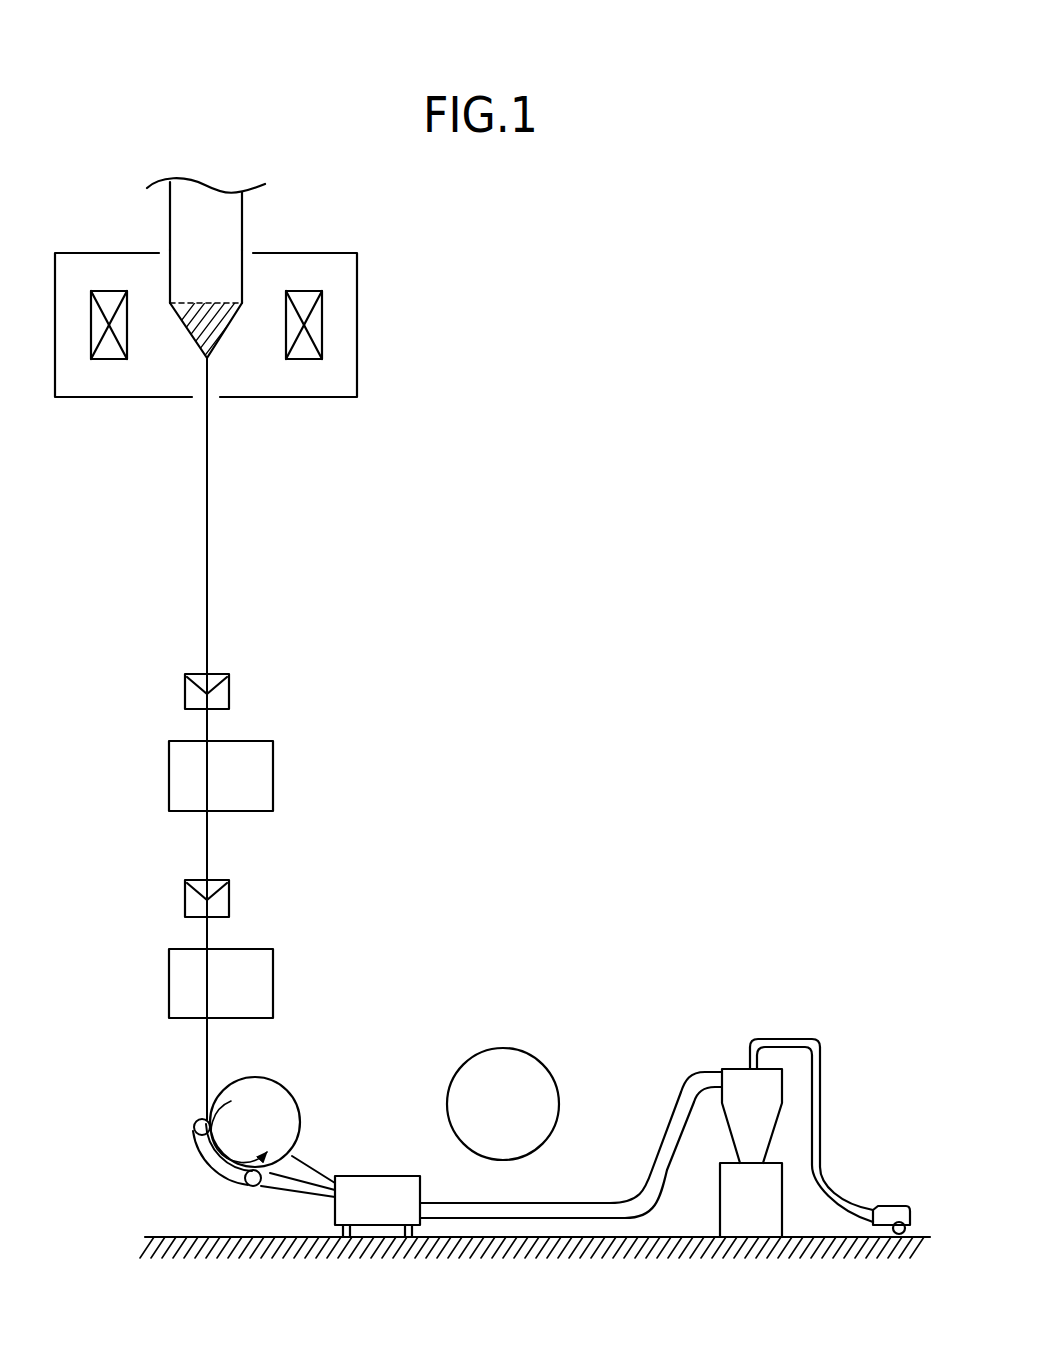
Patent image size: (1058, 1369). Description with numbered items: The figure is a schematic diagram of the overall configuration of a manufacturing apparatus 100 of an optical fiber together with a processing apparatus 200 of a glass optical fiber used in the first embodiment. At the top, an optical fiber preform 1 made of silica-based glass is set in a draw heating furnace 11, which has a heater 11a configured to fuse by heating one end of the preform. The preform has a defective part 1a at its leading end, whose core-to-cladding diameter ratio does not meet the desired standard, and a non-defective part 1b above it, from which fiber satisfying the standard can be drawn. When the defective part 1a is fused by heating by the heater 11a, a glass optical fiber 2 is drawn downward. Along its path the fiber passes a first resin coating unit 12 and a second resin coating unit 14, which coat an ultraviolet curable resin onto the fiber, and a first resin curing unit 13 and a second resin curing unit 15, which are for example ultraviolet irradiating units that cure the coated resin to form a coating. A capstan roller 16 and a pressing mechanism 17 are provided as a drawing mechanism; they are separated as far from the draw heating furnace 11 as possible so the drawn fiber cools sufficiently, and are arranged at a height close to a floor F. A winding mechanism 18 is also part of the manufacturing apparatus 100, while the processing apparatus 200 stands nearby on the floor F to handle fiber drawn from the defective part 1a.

The manufacturing apparatus 100 is at (688, 370).
The optical fiber preform 1 is at (203, 308).
The defective part 1a is at (188, 333).
The non-defective part 1b is at (170, 218).
The glass optical fiber 2 is at (208, 440).
The draw heating furnace 11 is at (251, 325).
The heater 11a is at (320, 303).
The first resin coating unit 12 is at (230, 686).
The first resin curing unit 13 is at (274, 772).
The second resin coating unit 14 is at (230, 892).
The second resin curing unit 15 is at (274, 980).
The capstan roller 16 is at (287, 1083).
The pressing mechanism 17 is at (199, 1160).
The winding mechanism 18 is at (510, 1047).
The processing apparatus 200 is at (752, 1006).
The floor F is at (165, 1237).